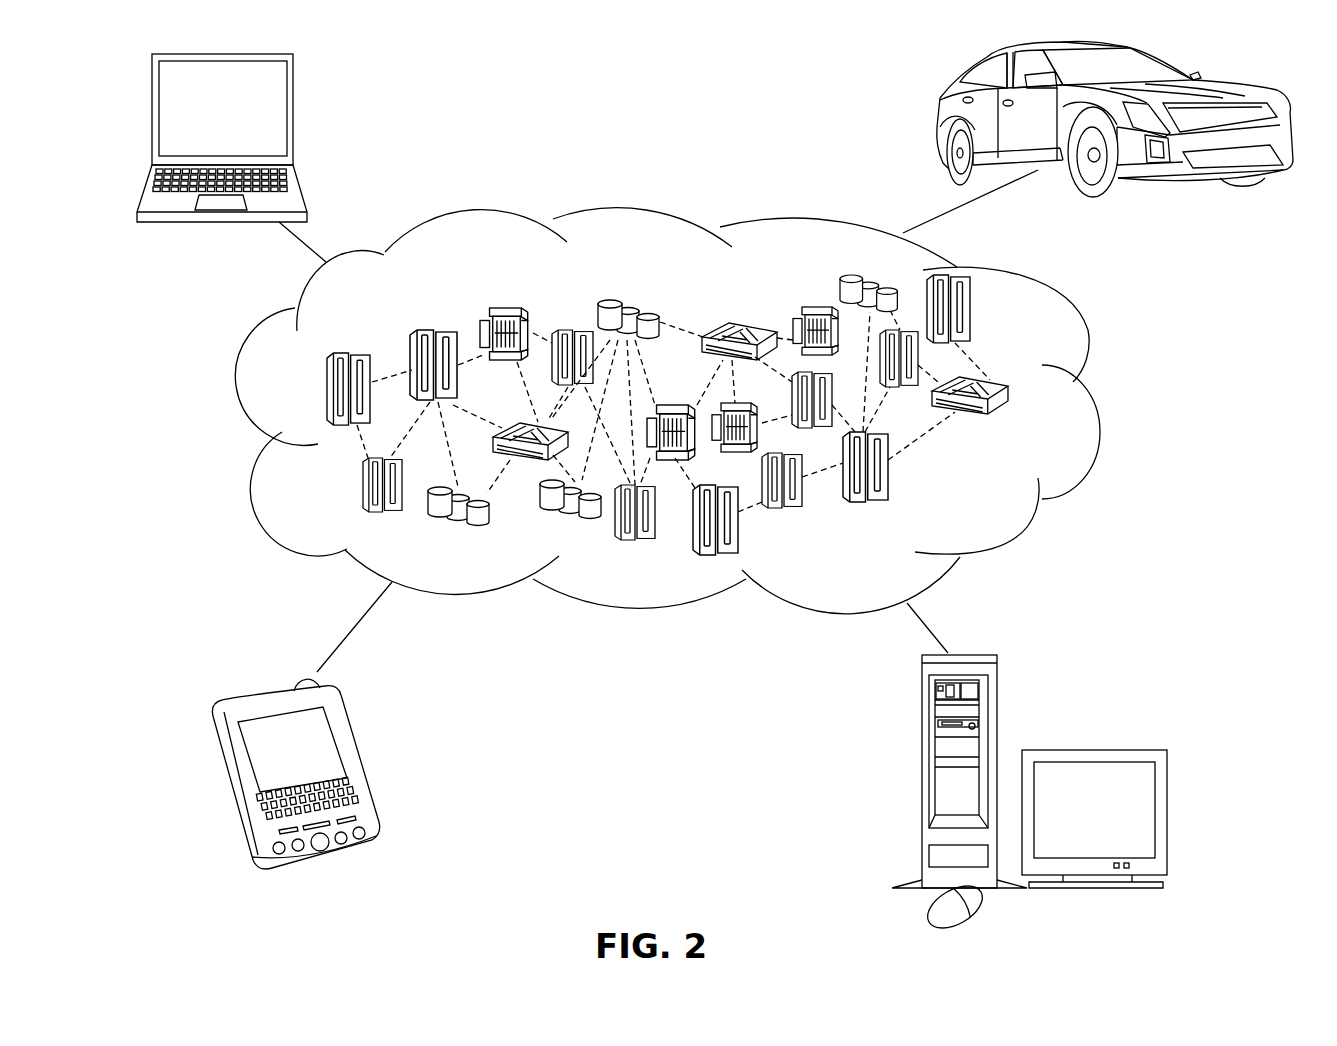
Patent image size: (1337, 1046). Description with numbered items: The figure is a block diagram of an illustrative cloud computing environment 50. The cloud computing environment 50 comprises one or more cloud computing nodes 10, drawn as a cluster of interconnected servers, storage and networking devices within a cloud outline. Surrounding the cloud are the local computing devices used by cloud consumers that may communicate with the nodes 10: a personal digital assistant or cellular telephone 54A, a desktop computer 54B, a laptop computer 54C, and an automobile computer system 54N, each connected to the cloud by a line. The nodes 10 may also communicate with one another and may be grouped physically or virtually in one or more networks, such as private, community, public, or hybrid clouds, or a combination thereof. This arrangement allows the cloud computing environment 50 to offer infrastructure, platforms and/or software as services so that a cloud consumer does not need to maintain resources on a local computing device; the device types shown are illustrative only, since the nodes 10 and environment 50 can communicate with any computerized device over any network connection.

The cloud computing nodes 10 is at (997, 501).
The cloud computing environment 50 is at (1085, 402).
The personal digital assistant (PDA) or cellular telephone 54A is at (352, 730).
The desktop computer 54B is at (922, 716).
The laptop computer 54C is at (294, 93).
The automobile computer system 54N is at (942, 108).